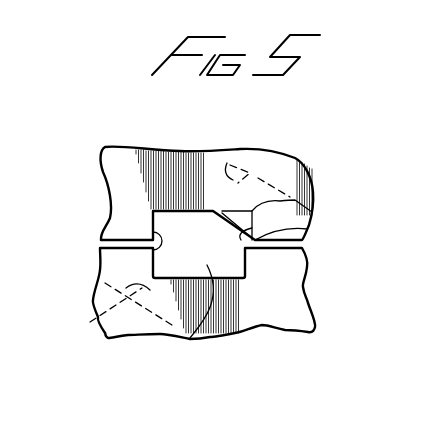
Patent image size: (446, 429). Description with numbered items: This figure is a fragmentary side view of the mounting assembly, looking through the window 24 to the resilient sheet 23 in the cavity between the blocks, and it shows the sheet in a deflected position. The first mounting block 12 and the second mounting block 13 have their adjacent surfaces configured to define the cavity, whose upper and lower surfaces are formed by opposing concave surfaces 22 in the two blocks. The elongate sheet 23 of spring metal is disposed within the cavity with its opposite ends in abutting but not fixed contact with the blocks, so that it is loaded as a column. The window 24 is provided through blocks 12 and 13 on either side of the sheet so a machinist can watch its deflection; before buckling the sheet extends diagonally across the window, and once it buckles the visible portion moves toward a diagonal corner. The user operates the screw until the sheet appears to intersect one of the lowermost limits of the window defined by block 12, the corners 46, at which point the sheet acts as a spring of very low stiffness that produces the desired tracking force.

The first mounting block 12 is at (120, 174).
The second mounting block 13 is at (292, 293).
The concave surfaces 22 is at (240, 149).
The elongate sheet of spring metal 23 is at (295, 200).
The window 24 is at (190, 338).
The corners 46 is at (307, 229).